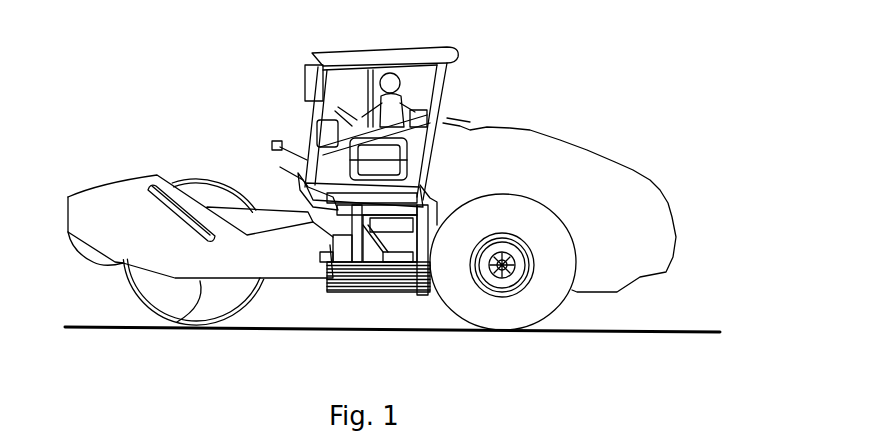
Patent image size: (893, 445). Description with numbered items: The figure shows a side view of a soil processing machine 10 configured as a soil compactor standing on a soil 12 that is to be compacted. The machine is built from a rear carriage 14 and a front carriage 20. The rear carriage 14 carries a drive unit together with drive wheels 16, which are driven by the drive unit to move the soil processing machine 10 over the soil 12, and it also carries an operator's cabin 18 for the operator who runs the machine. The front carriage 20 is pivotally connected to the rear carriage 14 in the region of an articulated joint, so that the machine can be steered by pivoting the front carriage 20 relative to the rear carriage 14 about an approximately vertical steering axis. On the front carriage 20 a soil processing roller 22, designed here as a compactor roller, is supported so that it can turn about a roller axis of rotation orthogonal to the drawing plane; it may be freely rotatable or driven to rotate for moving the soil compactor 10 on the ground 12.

The soil processing machine 10 is at (578, 60).
The soil 12 is at (396, 303).
The rear carriage 14 is at (525, 206).
The drive wheels 16 is at (527, 262).
The operator's cabin 18 is at (379, 47).
The front carriage 20 is at (200, 317).
The soil processing roller 22 is at (203, 175).